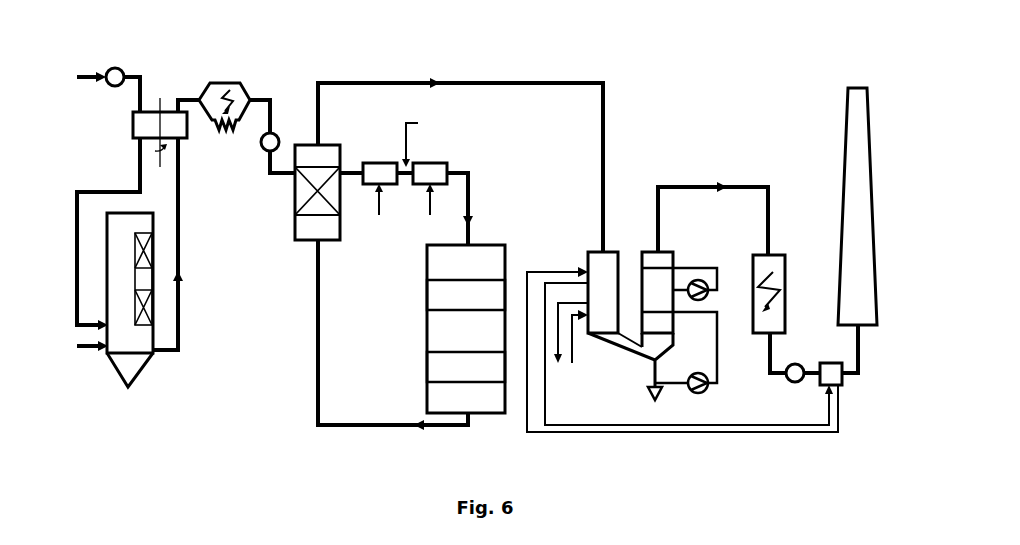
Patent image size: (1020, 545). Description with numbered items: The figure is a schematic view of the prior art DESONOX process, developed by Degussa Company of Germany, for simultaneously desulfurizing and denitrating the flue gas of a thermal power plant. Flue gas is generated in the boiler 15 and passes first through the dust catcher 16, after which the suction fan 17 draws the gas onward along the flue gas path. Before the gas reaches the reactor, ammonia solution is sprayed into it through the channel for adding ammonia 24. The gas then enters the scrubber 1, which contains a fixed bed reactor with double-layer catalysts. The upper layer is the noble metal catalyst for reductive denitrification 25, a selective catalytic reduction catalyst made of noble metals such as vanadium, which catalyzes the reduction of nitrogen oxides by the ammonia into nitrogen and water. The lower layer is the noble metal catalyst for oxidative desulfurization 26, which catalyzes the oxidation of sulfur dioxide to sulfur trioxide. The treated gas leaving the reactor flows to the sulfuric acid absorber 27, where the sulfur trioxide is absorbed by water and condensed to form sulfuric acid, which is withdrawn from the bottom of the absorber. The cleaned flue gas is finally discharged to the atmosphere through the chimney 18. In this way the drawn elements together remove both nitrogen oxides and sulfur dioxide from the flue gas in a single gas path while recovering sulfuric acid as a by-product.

The scrubber 1 is at (480, 260).
The boiler 15 is at (137, 337).
The dust catcher 16 is at (223, 127).
The suction fan 17 is at (272, 140).
The chimney 18 is at (860, 218).
The channel for adding ammonia 24 is at (427, 217).
The noble metal catalyst for reductive denitrification 25 is at (427, 309).
The noble metal catalyst for oxidative desulfurization 26 is at (427, 382).
The sulfuric acid absorber 27 is at (655, 345).